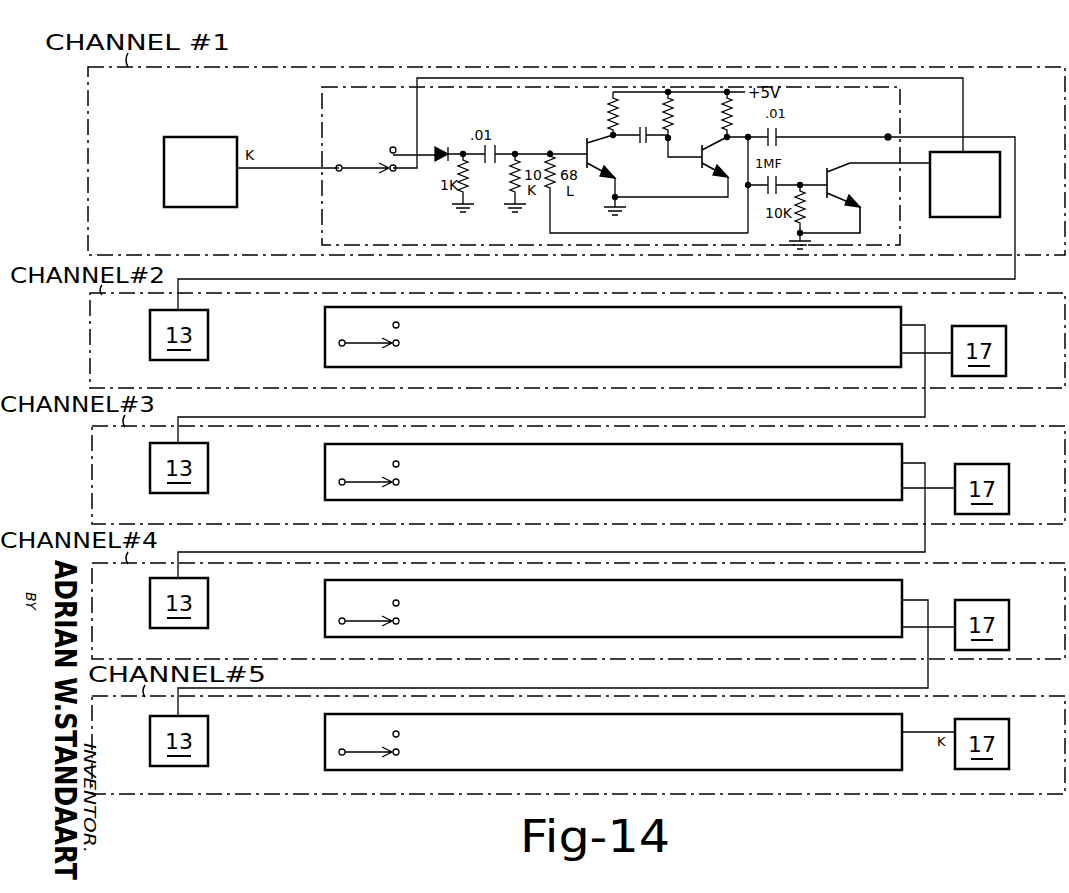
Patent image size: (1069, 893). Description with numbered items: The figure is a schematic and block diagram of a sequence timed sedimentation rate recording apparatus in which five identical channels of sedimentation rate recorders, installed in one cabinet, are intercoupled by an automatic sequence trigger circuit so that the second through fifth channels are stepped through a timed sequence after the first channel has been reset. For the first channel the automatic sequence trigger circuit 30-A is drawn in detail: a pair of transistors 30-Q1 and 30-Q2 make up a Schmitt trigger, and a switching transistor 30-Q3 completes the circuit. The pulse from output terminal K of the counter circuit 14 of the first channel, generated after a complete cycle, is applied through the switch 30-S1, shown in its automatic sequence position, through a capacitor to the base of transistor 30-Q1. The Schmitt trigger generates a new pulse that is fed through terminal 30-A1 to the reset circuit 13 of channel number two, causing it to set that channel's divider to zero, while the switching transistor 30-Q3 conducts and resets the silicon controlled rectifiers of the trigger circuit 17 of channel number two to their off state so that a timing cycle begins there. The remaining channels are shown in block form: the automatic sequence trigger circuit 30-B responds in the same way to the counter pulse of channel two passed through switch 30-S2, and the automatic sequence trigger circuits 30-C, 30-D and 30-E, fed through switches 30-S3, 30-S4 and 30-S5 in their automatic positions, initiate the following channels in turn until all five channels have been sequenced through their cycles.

The 3,600 counter circuit 14 is at (186, 188).
The trigger circuit 17 is at (953, 205).
The reset circuit 13 is at (179, 538).
The automatic sequence trigger circuit 30-A is at (373, 87).
The terminal 30-A1 is at (859, 121).
The switch 30-S1 is at (364, 145).
The switch 30-S2 is at (366, 329).
The switch 30-S3 is at (366, 468).
The switch 30-S4 is at (366, 607).
The switch 30-S5 is at (366, 738).
The automatic sequence trigger circuit 30-B is at (613, 337).
The automatic sequence trigger circuit 30-C is at (613, 472).
The automatic sequence trigger circuit 30-D is at (613, 608).
The automatic sequence trigger circuit 30-E is at (613, 742).
The transistor 30-Q1 is at (615, 158).
The transistor 30-Q2 is at (694, 167).
The switching transistor 30-Q3 is at (865, 197).